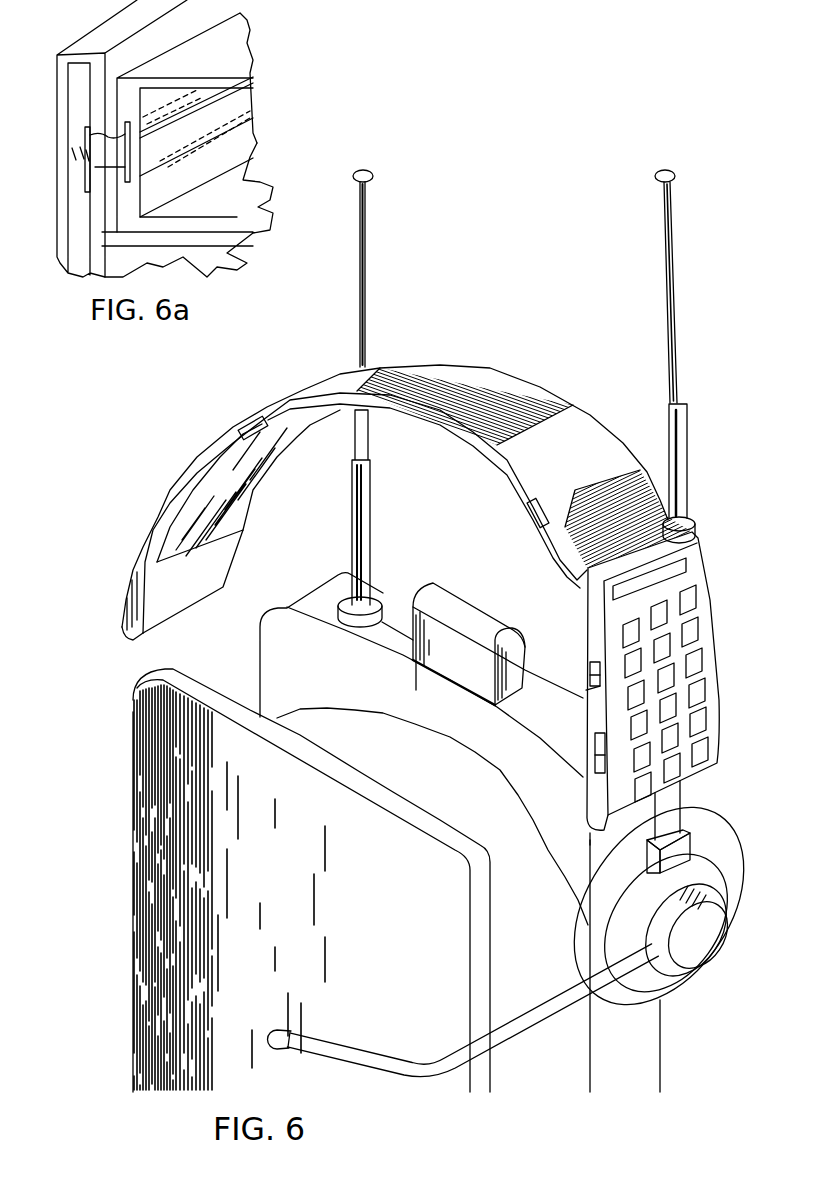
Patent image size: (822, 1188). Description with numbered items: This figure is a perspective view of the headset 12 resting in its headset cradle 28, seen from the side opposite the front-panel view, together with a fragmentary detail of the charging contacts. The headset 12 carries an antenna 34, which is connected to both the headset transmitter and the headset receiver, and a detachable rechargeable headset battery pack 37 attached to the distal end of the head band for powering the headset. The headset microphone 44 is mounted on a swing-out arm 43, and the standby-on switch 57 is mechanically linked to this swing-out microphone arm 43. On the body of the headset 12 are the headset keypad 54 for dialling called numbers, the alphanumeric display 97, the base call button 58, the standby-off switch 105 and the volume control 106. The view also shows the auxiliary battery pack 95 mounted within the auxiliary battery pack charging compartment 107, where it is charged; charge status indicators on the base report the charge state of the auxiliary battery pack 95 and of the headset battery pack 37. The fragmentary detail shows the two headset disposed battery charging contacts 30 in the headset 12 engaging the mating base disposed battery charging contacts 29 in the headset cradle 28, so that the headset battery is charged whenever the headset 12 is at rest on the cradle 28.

In FIG. 6a, the headset 12 is at (227, 60).
In FIG. 6, the headset 12 is at (190, 463).
In FIG. 6a, the headset cradle 28 is at (260, 207).
In FIG. 6a, the base disposed battery charging contacts 29 is at (85, 137).
In FIG. 6a, the headset disposed battery charging contacts 30 is at (153, 138).
In FIG. 6, the antenna 34 is at (690, 407).
In FIG. 6, the headset battery pack 37 is at (130, 640).
In FIG. 6, the swing-out arm 43 is at (513, 1037).
In FIG. 6, the headset microphone 44 is at (282, 1031).
In FIG. 6, the headset keypad 54 is at (667, 660).
In FIG. 6, the standby-on switch 57 is at (707, 927).
In FIG. 6, the base call button 58 is at (707, 746).
In FIG. 6, the auxiliary battery pack 95 is at (497, 628).
In FIG. 6, the alphanumeric display 97 is at (677, 570).
In FIG. 6, the standby-off switch 105 is at (588, 700).
In FIG. 6, the volume control 106 is at (593, 767).
In FIG. 6, the auxiliary battery pack charging compartment 107 is at (588, 700).